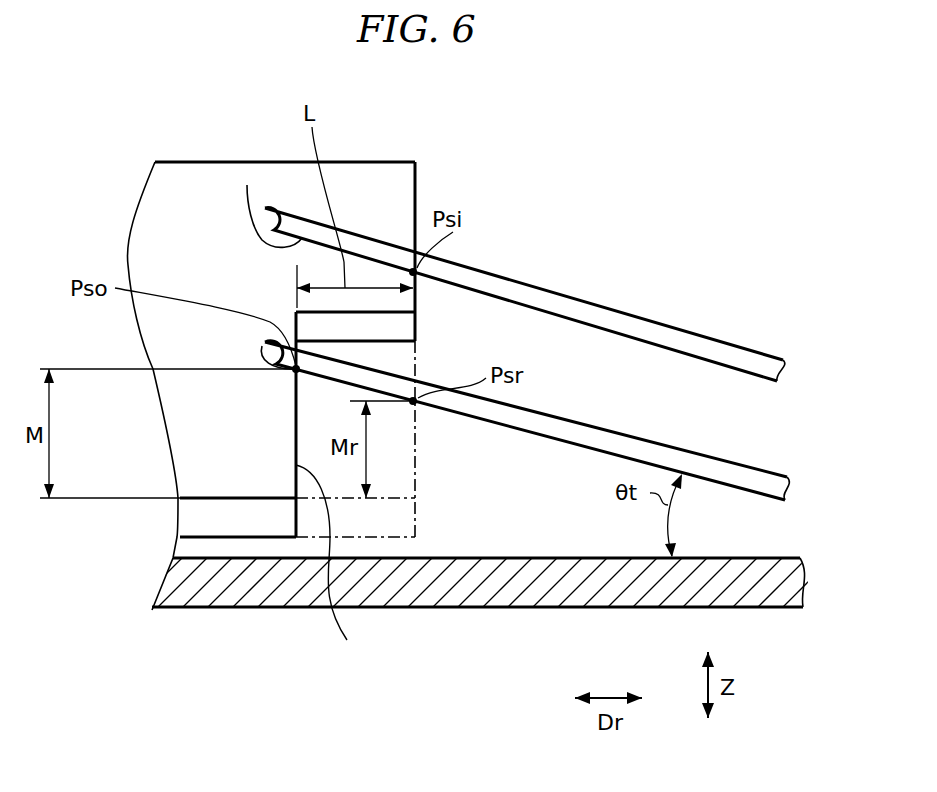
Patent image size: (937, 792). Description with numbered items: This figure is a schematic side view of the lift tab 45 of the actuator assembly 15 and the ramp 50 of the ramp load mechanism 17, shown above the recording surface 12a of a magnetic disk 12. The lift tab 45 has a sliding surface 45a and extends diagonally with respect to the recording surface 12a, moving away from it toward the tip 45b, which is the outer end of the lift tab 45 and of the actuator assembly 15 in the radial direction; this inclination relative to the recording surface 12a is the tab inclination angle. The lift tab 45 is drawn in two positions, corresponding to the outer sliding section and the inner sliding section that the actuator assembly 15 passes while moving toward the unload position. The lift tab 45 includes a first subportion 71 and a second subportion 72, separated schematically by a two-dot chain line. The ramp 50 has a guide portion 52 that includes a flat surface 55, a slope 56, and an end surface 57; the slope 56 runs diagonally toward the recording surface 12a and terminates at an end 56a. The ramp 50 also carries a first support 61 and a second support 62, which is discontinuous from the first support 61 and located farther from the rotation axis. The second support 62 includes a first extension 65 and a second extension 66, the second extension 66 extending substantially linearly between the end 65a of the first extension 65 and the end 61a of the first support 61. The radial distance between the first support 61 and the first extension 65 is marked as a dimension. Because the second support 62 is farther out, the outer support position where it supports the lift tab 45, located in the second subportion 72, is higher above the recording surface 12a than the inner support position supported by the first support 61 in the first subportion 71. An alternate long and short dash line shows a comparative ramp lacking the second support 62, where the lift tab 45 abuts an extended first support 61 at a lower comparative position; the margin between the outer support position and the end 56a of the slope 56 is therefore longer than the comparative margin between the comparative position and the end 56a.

The magnetic disk 12 is at (278, 592).
The recording surface 12a is at (590, 557).
The actuator assembly 15 is at (710, 336).
The ramp load mechanism 17 is at (308, 209).
The ramp 50 is at (415, 160).
The lift tab 45 is at (636, 326).
The sliding surface 45a is at (570, 323).
The tip 45b is at (265, 208).
The guide portion 52 is at (211, 355).
The slope 56 is at (188, 183).
The flat surface 55 is at (355, 161).
The end of the slope 56a is at (208, 499).
The end surface 57 is at (415, 180).
The first support 61 is at (415, 205).
The end of the first support 61a is at (415, 312).
The second support 62 is at (355, 506).
The first extension 65 is at (355, 506).
The end of the first extension 65a is at (297, 311).
The second extension 66 is at (415, 341).
The first subportion 71 is at (443, 283).
The second subportion 72 is at (247, 185).